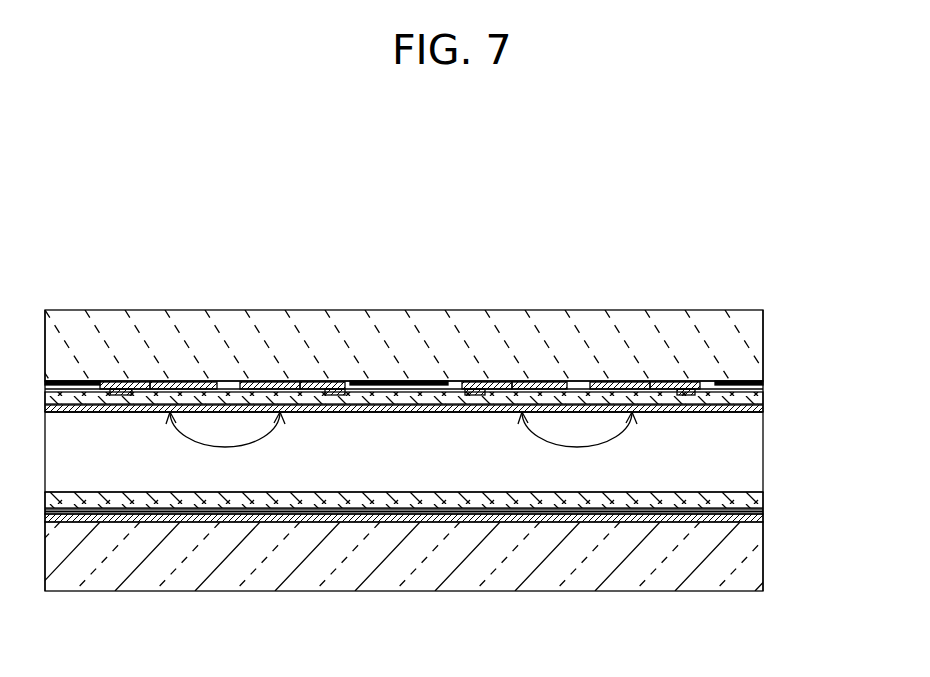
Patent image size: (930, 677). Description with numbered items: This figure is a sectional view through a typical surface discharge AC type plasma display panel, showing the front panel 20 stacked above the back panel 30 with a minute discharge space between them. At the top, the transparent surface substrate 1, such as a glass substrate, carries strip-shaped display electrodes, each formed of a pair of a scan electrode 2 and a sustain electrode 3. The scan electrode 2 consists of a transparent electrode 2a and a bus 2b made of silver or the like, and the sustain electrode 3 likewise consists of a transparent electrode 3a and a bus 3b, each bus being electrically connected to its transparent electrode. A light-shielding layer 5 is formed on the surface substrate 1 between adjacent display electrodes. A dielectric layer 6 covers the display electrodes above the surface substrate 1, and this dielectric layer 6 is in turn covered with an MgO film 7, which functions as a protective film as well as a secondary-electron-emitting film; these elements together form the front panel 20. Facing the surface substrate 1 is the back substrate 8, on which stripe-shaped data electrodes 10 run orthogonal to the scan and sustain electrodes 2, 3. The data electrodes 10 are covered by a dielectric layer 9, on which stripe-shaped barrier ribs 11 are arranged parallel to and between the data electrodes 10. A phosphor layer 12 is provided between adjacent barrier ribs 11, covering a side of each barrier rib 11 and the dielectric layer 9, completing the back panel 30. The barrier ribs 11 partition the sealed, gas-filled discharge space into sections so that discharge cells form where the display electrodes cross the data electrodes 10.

The surface substrate 1 is at (765, 335).
The scan electrode 2 is at (193, 268).
The transparent electrode 2a is at (178, 386).
The bus 2b is at (120, 386).
The sustain electrode 3 is at (342, 268).
The transparent electrode 3a is at (270, 386).
The bus 3b is at (330, 386).
The light-shielding layer 5 is at (75, 382).
The dielectric layer 6 is at (763, 397).
The MgO film 7 is at (763, 407).
The back substrate 8 is at (715, 575).
The dielectric layer 9 is at (763, 512).
The data electrode 10 is at (763, 519).
The barrier rib 11 is at (679, 472).
The phosphor layer 12 is at (763, 502).
The front panel 20 is at (842, 215).
The back panel 30 is at (855, 458).